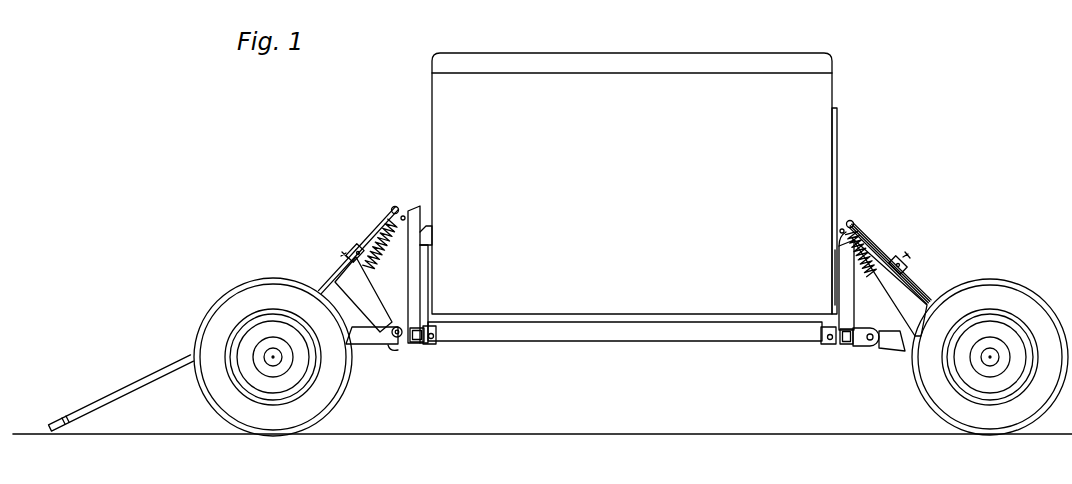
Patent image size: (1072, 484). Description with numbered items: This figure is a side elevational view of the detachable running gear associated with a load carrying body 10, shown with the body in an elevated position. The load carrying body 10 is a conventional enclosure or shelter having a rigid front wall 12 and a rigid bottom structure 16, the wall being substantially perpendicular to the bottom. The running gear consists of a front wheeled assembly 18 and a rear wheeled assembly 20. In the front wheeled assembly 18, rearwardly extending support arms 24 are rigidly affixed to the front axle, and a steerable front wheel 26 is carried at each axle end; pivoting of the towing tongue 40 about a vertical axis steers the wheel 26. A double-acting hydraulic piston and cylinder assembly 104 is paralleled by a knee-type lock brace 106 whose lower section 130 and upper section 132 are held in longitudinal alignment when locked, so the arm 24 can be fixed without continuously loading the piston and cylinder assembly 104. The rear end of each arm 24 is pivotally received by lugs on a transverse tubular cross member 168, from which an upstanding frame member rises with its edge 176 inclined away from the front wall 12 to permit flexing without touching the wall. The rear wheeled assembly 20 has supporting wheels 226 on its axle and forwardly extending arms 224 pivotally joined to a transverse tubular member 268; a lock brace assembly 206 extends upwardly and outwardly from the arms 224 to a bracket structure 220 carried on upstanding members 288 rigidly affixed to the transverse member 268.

The load carrying body 10 is at (838, 103).
The front wall 12 is at (432, 93).
The bottom structure 16 is at (613, 337).
The front wheeled assembly 18 is at (284, 258).
The rear wheeled assembly 20 is at (905, 242).
The support arm 24 is at (362, 342).
The steerable front wheel 26 is at (226, 316).
The towing tongue 40 is at (125, 392).
The piston and cylinder assembly 104 is at (375, 276).
The knee-type lock brace 106 is at (363, 233).
The lower section 130 is at (331, 284).
The upper section 132 is at (393, 207).
The transverse tubular cross member 168 is at (418, 344).
The inclined edge portion 176 is at (415, 215).
The lock brace assembly 206 is at (916, 277).
The bracket structure 220 is at (840, 229).
The forwardly extending arm 224 is at (900, 346).
The supporting wheel 226 is at (990, 296).
The transverse tubular member 268 is at (850, 346).
The upstanding member 288 is at (847, 272).